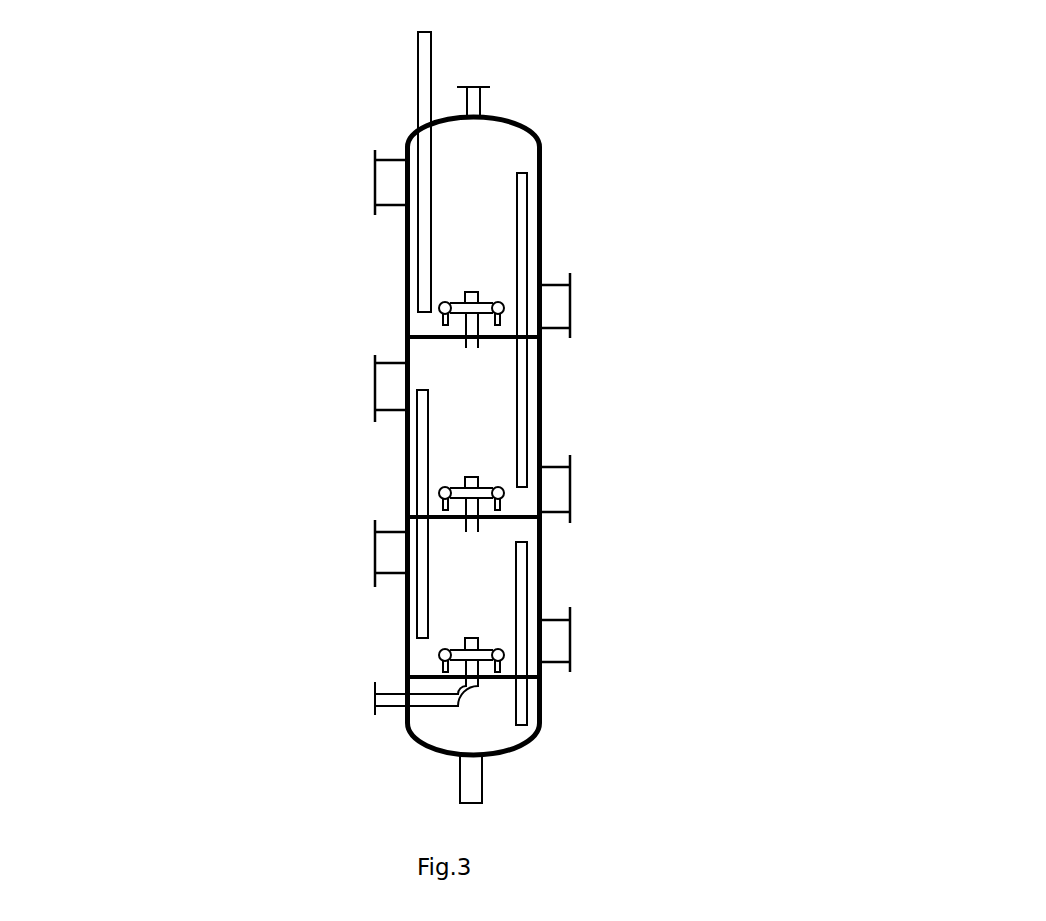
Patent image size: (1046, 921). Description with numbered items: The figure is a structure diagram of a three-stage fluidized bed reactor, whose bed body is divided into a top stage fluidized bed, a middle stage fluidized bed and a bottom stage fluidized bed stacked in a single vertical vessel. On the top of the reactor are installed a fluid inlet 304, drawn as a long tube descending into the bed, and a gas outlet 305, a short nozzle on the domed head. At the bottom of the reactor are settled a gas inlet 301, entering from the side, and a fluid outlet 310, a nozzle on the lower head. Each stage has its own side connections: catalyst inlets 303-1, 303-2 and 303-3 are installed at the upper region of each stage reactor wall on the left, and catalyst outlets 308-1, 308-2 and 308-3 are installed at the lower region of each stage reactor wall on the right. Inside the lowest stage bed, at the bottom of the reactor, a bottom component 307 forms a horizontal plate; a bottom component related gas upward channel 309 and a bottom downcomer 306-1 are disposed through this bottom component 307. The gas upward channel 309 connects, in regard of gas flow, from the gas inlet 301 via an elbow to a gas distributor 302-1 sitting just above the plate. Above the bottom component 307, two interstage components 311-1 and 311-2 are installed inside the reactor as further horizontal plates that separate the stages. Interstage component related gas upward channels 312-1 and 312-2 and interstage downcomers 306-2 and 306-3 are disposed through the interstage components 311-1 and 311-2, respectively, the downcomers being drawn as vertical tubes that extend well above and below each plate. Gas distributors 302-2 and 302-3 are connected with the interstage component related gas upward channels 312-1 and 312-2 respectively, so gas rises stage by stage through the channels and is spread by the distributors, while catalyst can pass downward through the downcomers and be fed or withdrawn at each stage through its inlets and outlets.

The gas inlet 301 is at (373, 697).
The gas distributor 302-1 is at (441, 652).
The gas distributor 302-2 is at (441, 490).
The gas distributor 302-3 is at (441, 305).
The catalyst inlet 303-1 is at (373, 550).
The catalyst inlet 303-2 is at (373, 373).
The catalyst inlet 303-3 is at (373, 187).
The fluid inlet 304 is at (418, 75).
The gas outlet 305 is at (480, 87).
The bottom downcomer 306-1 is at (528, 590).
The interstage downcomer 306-2 is at (417, 452).
The interstage downcomer 306-3 is at (528, 188).
The bottom component 307 is at (503, 675).
The catalyst outlet 308-1 is at (570, 627).
The catalyst outlet 308-2 is at (570, 465).
The catalyst outlet 308-3 is at (570, 297).
The bottom component related gas upward channel 309 is at (478, 695).
The fluid outlet 310 is at (483, 790).
The interstage component 311-1 is at (522, 515).
The interstage component 311-2 is at (498, 333).
The interstage component related gas upward channel 312-1 is at (473, 510).
The interstage component related gas upward channel 312-2 is at (460, 328).